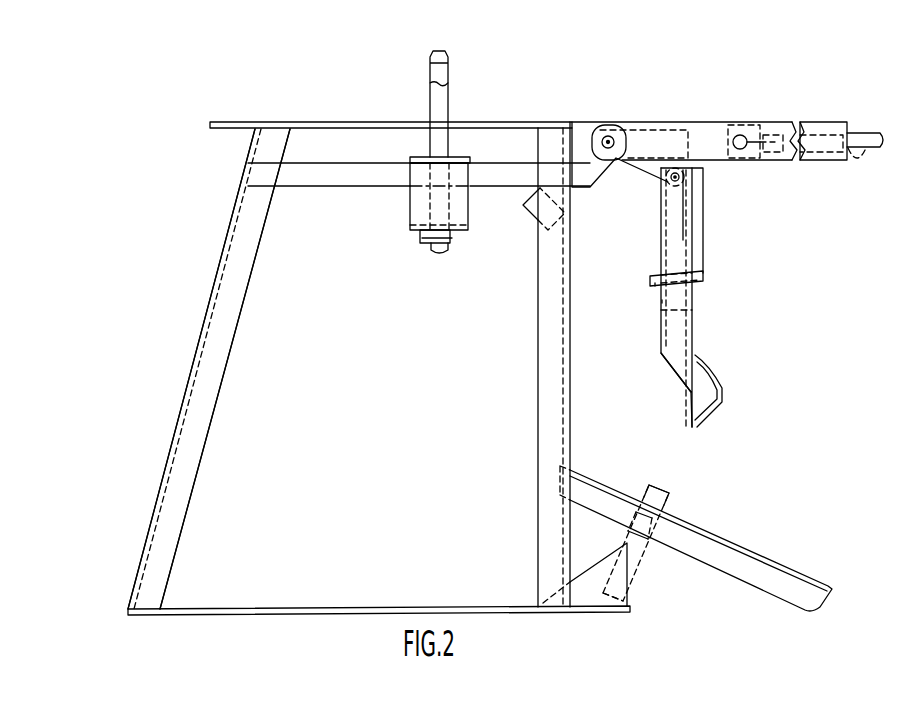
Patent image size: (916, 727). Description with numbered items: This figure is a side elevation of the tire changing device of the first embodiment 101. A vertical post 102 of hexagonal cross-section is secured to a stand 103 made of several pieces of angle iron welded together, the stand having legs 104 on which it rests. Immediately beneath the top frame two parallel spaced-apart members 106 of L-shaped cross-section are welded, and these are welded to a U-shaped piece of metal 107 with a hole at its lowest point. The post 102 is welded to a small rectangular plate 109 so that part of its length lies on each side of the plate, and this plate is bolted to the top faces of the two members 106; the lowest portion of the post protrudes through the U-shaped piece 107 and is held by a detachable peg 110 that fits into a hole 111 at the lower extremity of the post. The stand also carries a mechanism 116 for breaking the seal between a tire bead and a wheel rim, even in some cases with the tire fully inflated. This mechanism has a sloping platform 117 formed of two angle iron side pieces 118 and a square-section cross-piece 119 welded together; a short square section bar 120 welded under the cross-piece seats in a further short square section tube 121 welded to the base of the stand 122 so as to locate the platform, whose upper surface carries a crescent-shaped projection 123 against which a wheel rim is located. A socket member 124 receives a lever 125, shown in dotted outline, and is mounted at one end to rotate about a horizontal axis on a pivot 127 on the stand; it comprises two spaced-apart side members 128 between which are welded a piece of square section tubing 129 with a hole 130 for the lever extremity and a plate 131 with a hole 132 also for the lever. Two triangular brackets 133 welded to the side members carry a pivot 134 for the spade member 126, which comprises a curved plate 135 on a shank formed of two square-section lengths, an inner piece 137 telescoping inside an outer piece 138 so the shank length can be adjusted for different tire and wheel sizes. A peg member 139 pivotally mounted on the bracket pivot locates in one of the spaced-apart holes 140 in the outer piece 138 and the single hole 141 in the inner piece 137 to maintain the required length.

The device of the first embodiment 101 is at (214, 262).
The vertical post 102 is at (440, 104).
The stand 103 is at (245, 213).
The legs 104 is at (217, 378).
The parallel spaced-apart members 106 is at (378, 184).
The U-shaped piece of metal 107 is at (410, 226).
The small rectangular plate 109 is at (412, 158).
The detachable peg 110 is at (425, 242).
The hole 111 is at (448, 241).
The mechanism 116 is at (790, 350).
The sloping platform 117 is at (738, 535).
The side pieces 118 is at (755, 562).
The cross-piece 119 is at (646, 520).
The short square section bar 120 is at (625, 595).
The further short square section tube 121 is at (620, 544).
The base of the stand 122 is at (503, 606).
The projection 123 is at (660, 490).
The socket member 124 is at (705, 128).
The lever 125 is at (878, 148).
The spade member 126 is at (677, 364).
The pivot 127 is at (608, 136).
The side members 128 is at (778, 160).
The piece of square section tubing 129 is at (740, 155).
The hole 130 is at (770, 134).
The plate 131 is at (838, 100).
The hole 132 is at (851, 152).
The triangular brackets 133 is at (642, 172).
The pivot 134 is at (675, 167).
The curved plate 135 is at (713, 394).
The inner piece of shank tubing 137 is at (662, 208).
The outer piece of shank tubing 138 is at (693, 327).
The peg member 139 is at (712, 278).
The spaced-apart holes 140 is at (662, 300).
The single hole 141 is at (700, 272).